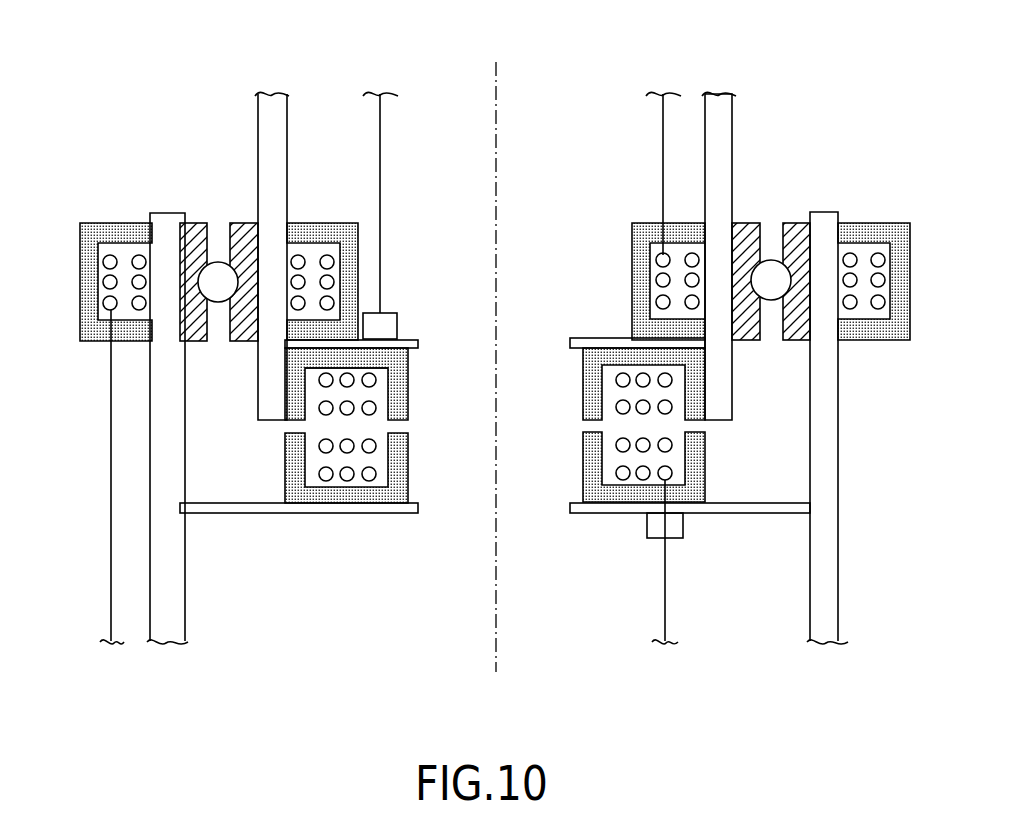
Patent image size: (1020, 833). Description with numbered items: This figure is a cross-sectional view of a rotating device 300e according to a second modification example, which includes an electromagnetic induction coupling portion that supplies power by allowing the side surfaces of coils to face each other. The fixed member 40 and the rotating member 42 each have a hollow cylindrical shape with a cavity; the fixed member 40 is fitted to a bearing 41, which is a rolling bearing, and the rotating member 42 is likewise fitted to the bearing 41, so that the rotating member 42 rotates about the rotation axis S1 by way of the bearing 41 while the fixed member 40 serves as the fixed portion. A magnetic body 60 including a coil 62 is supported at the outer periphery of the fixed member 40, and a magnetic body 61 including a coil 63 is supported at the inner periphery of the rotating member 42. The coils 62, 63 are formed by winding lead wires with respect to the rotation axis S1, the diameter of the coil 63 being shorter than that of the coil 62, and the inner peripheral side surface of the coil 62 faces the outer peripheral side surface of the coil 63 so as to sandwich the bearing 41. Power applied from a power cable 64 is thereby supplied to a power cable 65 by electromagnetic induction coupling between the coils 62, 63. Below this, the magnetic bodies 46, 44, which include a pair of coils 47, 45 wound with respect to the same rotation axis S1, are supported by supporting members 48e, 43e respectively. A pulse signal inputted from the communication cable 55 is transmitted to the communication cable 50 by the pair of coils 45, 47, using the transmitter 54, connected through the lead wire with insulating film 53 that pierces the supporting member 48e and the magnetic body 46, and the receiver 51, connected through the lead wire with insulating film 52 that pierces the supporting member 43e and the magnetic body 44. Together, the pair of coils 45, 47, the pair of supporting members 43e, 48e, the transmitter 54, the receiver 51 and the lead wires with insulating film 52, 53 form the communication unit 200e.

The fixed member 40 is at (186, 592).
The bearing 41 is at (196, 226).
The rotating member 42 is at (258, 130).
The supporting member 43e is at (418, 345).
The magnetic body 44 is at (403, 400).
The coil 45 is at (369, 411).
The magnetic body 46 is at (403, 467).
The coil 47 is at (369, 478).
The supporting member 48e is at (418, 508).
The communication cable 50 is at (381, 127).
The receiver 51 is at (387, 314).
The lead wire with insulating film 52 is at (370, 362).
The lead wire with insulating film 53 is at (668, 508).
The transmitter 54 is at (684, 525).
The communication cable 55 is at (667, 585).
The magnetic body 60 is at (141, 238).
The magnetic body 61 is at (313, 236).
The coil 62 is at (110, 255).
The coil 63 is at (329, 256).
The power cable 64 is at (110, 597).
The power cable 65 is at (662, 131).
The rotation axis S1 is at (496, 126).
The communication unit 200e is at (587, 300).
The rotating device 300e is at (598, 24).